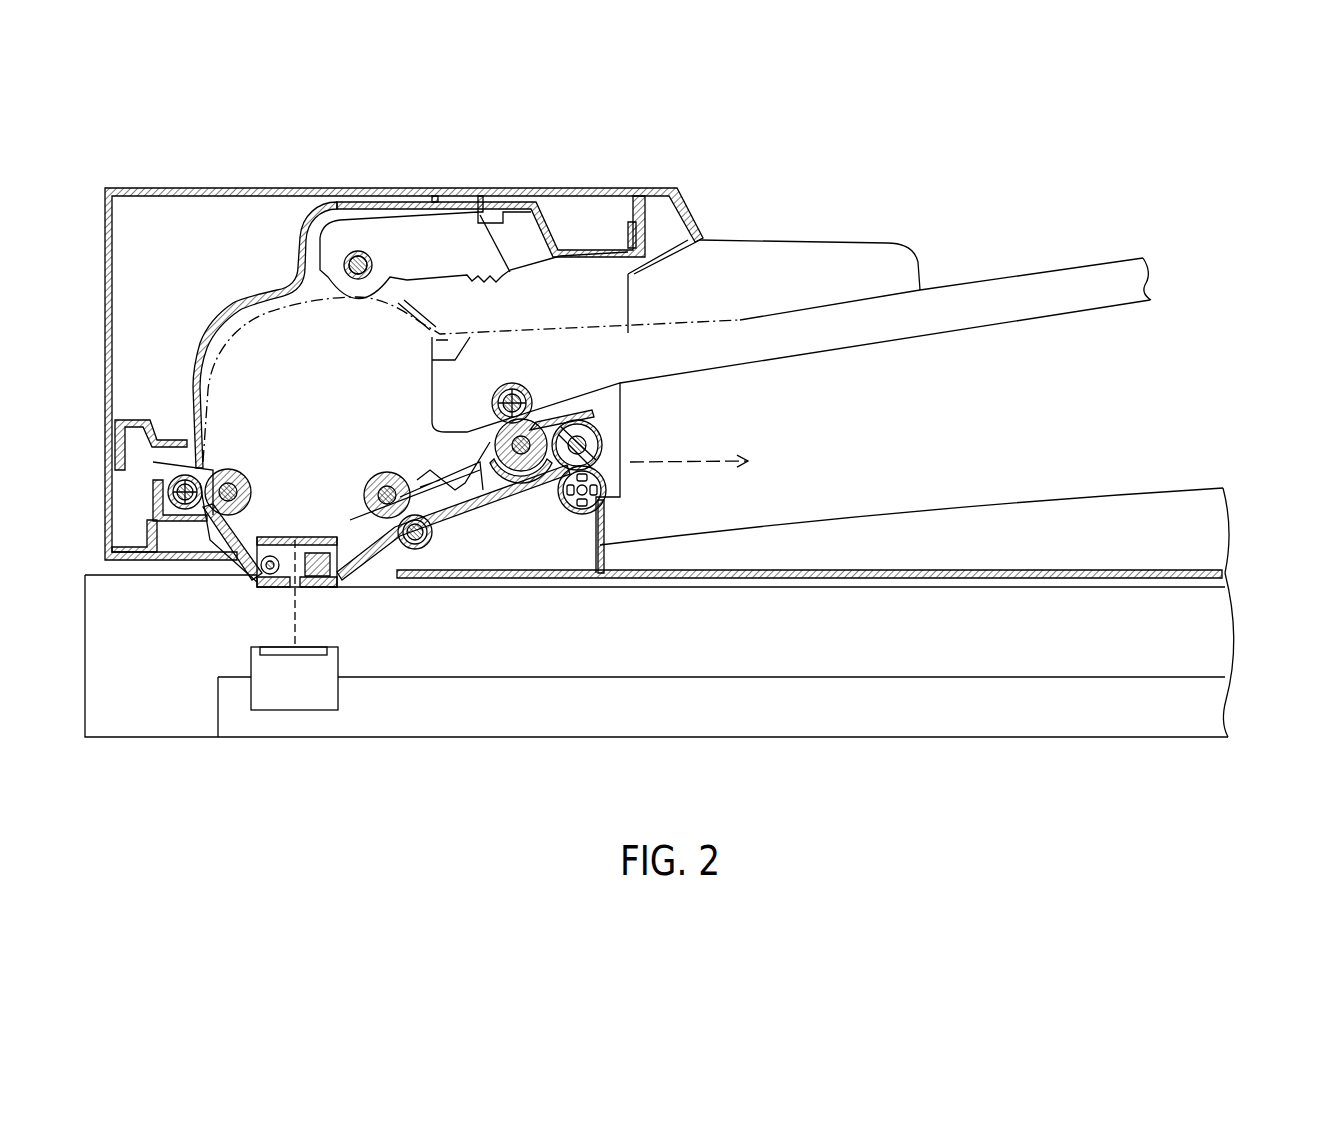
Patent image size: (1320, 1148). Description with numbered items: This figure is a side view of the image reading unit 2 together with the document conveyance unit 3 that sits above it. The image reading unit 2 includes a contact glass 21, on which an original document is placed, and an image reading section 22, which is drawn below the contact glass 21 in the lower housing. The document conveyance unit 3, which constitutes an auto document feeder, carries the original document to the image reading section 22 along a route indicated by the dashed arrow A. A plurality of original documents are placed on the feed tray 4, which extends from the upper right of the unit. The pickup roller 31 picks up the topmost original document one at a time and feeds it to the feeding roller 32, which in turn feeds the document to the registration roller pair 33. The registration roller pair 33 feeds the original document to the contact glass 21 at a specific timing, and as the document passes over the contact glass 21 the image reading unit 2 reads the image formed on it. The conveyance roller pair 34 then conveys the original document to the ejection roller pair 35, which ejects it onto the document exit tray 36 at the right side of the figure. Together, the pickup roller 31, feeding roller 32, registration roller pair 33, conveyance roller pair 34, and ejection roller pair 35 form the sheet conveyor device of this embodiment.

The image reading unit 2 is at (1257, 643).
The document conveyance unit 3 is at (926, 170).
The feed tray 4 is at (1083, 262).
The contact glass 21 is at (491, 588).
The image reading section 22 is at (349, 666).
The pickup roller 31 is at (487, 278).
The feeding roller 32 is at (357, 296).
The registration roller pair 33 is at (235, 470).
The conveyance roller pair 34 is at (384, 476).
The ejection roller pair 35 is at (587, 514).
The document exit tray 36 is at (1000, 490).
The dashed arrow A is at (678, 464).